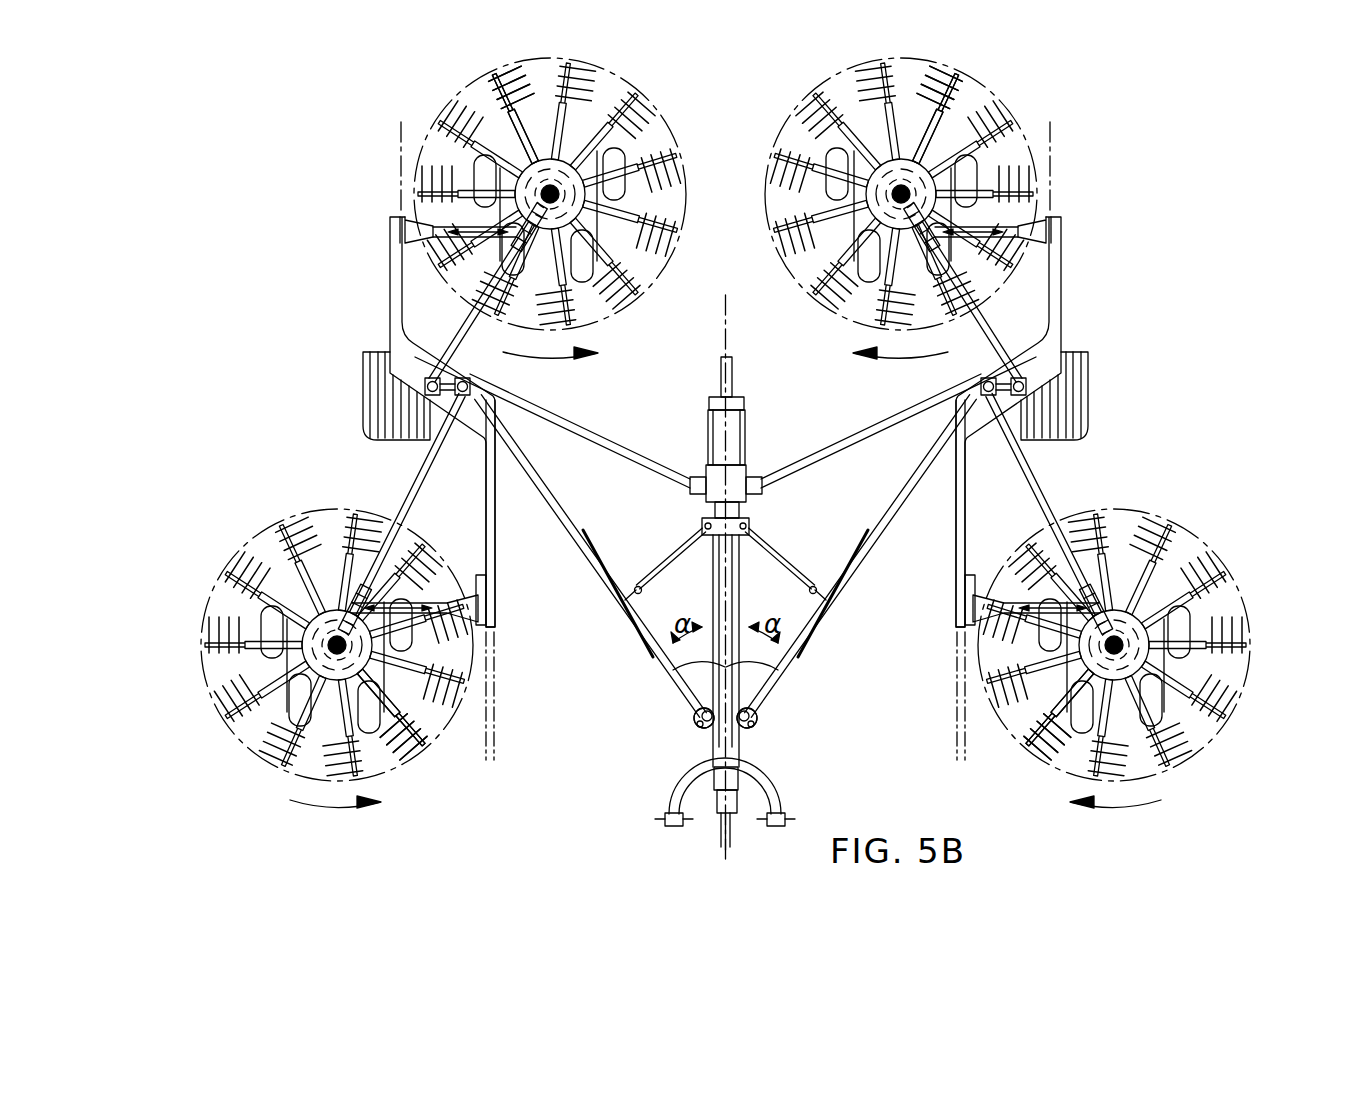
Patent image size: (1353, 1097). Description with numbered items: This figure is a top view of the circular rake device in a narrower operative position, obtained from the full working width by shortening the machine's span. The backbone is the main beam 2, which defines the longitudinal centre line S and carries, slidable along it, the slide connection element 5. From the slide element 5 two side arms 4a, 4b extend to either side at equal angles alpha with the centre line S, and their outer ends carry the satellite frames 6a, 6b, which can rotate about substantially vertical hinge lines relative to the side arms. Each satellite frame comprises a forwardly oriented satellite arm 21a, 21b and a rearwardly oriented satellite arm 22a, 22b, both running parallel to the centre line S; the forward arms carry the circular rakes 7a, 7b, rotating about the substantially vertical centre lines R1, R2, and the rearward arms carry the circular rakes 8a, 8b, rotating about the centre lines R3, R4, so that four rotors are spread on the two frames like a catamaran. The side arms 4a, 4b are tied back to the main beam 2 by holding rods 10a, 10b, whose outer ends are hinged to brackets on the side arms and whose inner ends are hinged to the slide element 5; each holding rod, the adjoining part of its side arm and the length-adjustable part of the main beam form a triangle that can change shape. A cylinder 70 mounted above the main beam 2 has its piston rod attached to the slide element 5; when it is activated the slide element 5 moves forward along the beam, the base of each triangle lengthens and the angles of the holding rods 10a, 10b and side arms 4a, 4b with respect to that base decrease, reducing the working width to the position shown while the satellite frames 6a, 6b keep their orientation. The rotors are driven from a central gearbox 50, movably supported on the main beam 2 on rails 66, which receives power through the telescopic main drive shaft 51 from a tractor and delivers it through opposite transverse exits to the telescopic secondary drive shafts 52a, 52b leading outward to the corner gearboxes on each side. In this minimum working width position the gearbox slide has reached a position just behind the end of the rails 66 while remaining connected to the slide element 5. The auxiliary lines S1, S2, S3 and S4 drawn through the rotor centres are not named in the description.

The rotational centre line R1 is at (1162, 658).
The rotational centre line R2 is at (268, 720).
The rotational centre line R3 is at (912, 197).
The rotational centre line R4 is at (520, 140).
The longitudinal centre line S is at (742, 589).
The rotor axis S1 is at (969, 731).
The rotor axis S2 is at (483, 760).
The rotor axis S3 is at (1061, 150).
The rotor axis S4 is at (389, 150).
The main beam 2 is at (725, 591).
The side arm 4a is at (856, 561).
The side arm 4b is at (600, 577).
The slide connection element 5 is at (753, 717).
The satellite frame 6a is at (1111, 388).
The satellite frame 6b is at (405, 353).
The circular rake 7a is at (1055, 777).
The circular rake 7b is at (398, 753).
The circular rake 8a is at (1024, 95).
The circular rake 8b is at (535, 79).
The holding rod 10a is at (783, 560).
The holding rod 10b is at (660, 568).
The forwardly oriented satellite arm 21a is at (1002, 513).
The forwardly oriented satellite arm 21b is at (490, 470).
The rearwardly oriented satellite arm 22a is at (1049, 419).
The rearwardly oriented satellite arm 22b is at (395, 270).
The central gearbox 50 is at (735, 480).
The main drive shaft 51 is at (692, 685).
The secondary drive shaft 52a is at (898, 422).
The secondary drive shaft 52b is at (547, 427).
The rails 66 is at (708, 447).
The cylinder 70 is at (726, 402).